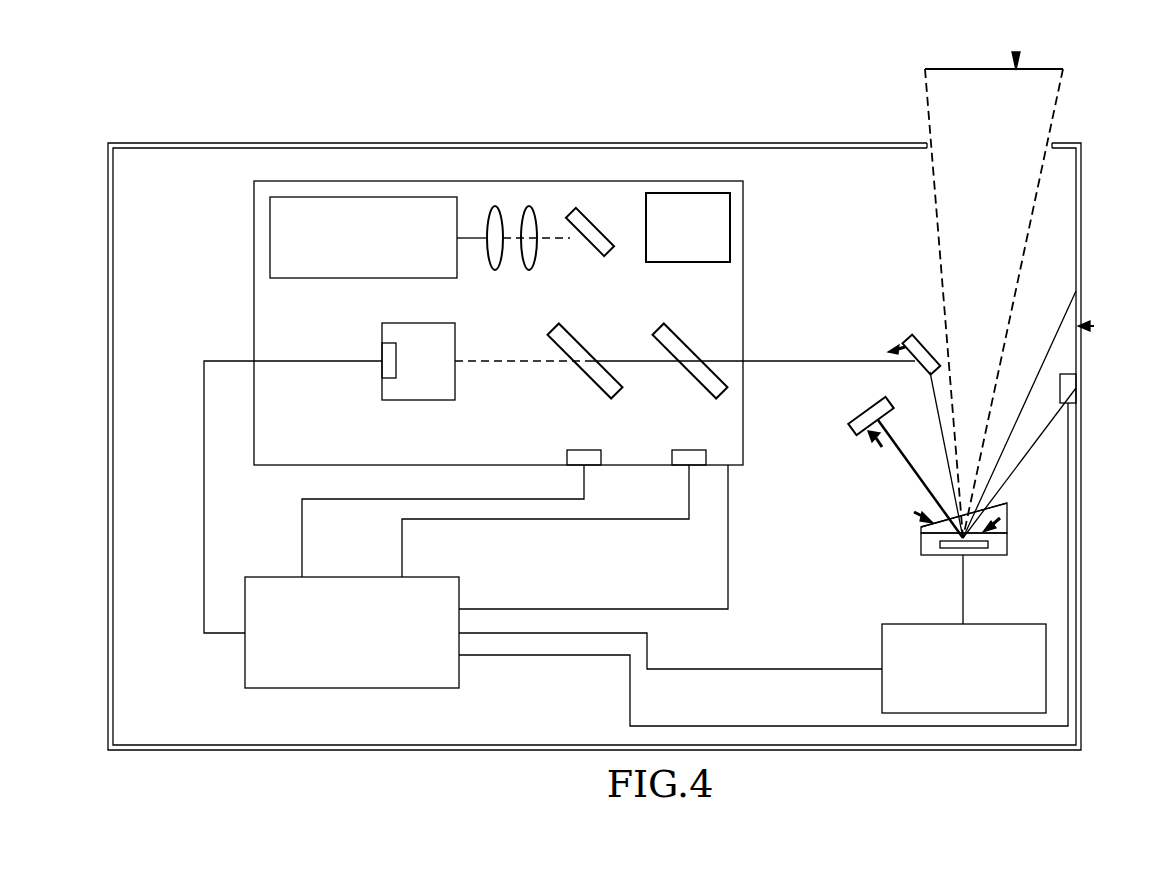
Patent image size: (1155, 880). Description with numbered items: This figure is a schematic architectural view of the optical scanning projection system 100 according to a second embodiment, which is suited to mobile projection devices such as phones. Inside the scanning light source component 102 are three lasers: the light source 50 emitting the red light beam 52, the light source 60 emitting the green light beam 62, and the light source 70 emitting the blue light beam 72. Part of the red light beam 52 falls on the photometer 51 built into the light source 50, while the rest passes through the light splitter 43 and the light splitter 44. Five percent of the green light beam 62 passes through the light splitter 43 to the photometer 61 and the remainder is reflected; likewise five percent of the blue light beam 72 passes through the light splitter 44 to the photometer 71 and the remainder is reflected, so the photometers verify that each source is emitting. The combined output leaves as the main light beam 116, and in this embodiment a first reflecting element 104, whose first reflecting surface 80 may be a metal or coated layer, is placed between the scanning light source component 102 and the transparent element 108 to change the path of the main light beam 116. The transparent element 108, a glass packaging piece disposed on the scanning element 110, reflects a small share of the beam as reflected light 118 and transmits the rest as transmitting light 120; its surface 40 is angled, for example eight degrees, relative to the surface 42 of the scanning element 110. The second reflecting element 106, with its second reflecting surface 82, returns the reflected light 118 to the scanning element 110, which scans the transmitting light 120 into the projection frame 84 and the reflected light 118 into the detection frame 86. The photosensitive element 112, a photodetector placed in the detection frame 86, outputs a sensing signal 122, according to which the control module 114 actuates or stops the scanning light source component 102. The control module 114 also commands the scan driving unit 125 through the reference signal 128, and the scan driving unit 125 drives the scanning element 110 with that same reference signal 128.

The optical scanning projection system 100 is at (68, 90).
The scanning light source component 102 is at (497, 181).
The light source 60 is at (362, 279).
The light source 50 is at (428, 401).
The photometer 51 is at (383, 350).
The red light beam 52 is at (512, 362).
The light splitter 43 is at (555, 330).
The light splitter 44 is at (661, 330).
The green light beam 62 is at (572, 240).
The light source 70 is at (646, 205).
The blue light beam 72 is at (690, 296).
The photometer 61 is at (590, 450).
The photometer 71 is at (695, 450).
The main light beam 116 is at (795, 360).
The first reflecting surface 80 is at (885, 353).
The first reflecting element 104 is at (915, 338).
The second reflecting element 106 is at (872, 420).
The reflected light 118 is at (940, 483).
The second reflecting surface 82 is at (882, 447).
The transmitting light 120 is at (935, 168).
The projection frame 84 is at (1016, 52).
The detection frame 86 is at (1094, 325).
The photosensitive element 112 is at (1076, 374).
The surface 40 is at (912, 514).
The transparent element 108 is at (1010, 515).
The surface 42 is at (1000, 518).
The scanning element 110 is at (1008, 545).
The reference signal 128 is at (968, 573).
The control module 114 is at (462, 590).
The sensing signal 122 is at (725, 725).
The scan driving unit 125 is at (878, 685).